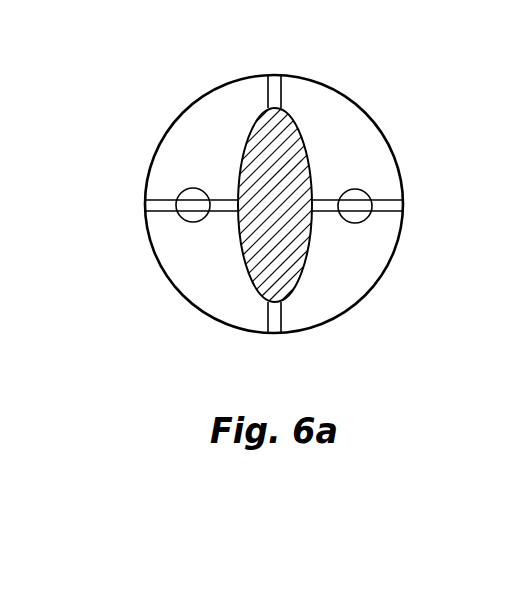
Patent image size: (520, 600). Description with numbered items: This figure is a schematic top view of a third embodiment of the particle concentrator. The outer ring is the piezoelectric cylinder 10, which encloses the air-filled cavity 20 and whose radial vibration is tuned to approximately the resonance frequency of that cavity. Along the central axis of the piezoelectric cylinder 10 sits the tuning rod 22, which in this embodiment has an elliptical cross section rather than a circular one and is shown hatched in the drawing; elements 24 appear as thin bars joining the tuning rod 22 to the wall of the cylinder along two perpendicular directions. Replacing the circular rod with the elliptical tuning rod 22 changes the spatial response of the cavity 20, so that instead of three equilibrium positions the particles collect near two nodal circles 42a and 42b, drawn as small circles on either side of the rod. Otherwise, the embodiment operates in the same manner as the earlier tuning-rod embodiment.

The piezoelectric cylinder 10 is at (318, 76).
The air-filled cavity 20 is at (343, 140).
The tuning rod 22 is at (291, 214).
The channels 24 is at (263, 93).
The nodal circle 42a is at (189, 228).
The nodal circle 42b is at (362, 188).